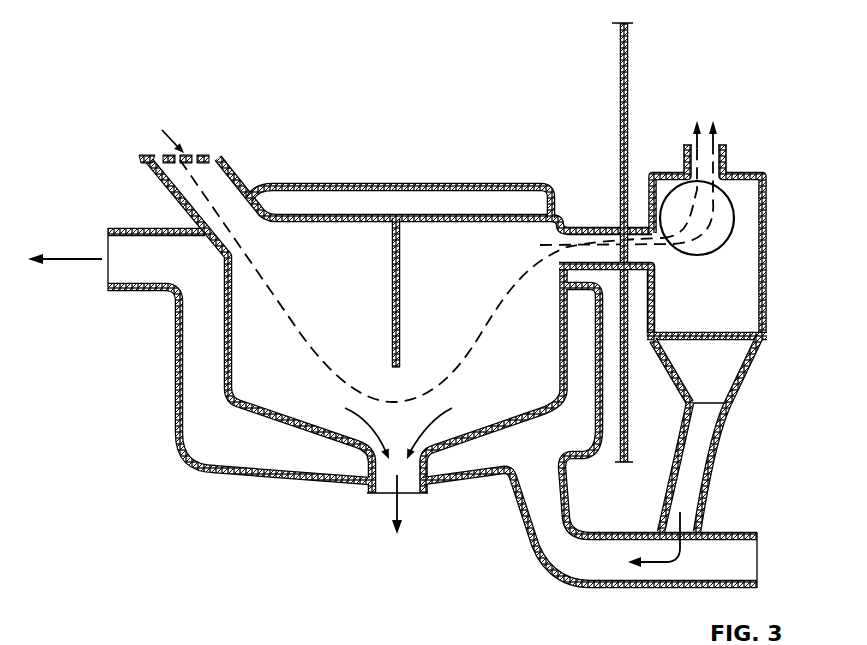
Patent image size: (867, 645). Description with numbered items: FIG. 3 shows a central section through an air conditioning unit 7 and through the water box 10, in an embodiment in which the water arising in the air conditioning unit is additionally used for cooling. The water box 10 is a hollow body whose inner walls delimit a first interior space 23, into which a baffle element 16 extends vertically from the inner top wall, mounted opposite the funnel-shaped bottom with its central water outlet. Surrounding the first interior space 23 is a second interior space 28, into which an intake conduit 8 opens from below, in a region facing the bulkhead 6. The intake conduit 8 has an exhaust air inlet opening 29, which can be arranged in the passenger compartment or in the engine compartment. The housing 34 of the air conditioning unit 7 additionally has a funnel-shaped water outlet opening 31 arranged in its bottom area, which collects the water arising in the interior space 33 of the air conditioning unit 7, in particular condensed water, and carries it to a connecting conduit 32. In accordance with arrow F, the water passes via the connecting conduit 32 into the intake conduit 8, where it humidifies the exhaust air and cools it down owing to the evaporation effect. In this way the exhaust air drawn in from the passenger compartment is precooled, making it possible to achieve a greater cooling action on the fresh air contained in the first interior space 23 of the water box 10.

The water box 10 is at (324, 160).
The baffle element 16 is at (400, 285).
The bulkhead 6 is at (628, 128).
The air conditioning unit 7 is at (788, 186).
The housing 34 is at (767, 219).
The interior space 33 is at (725, 295).
The water outlet opening 31 is at (707, 378).
The connecting conduit 32 is at (708, 460).
The exhaust air inlet opening 29 is at (730, 565).
The intake conduit 8 is at (592, 588).
The first interior space 23 is at (290, 361).
The second interior space 28 is at (310, 452).
The arrow F is at (683, 568).